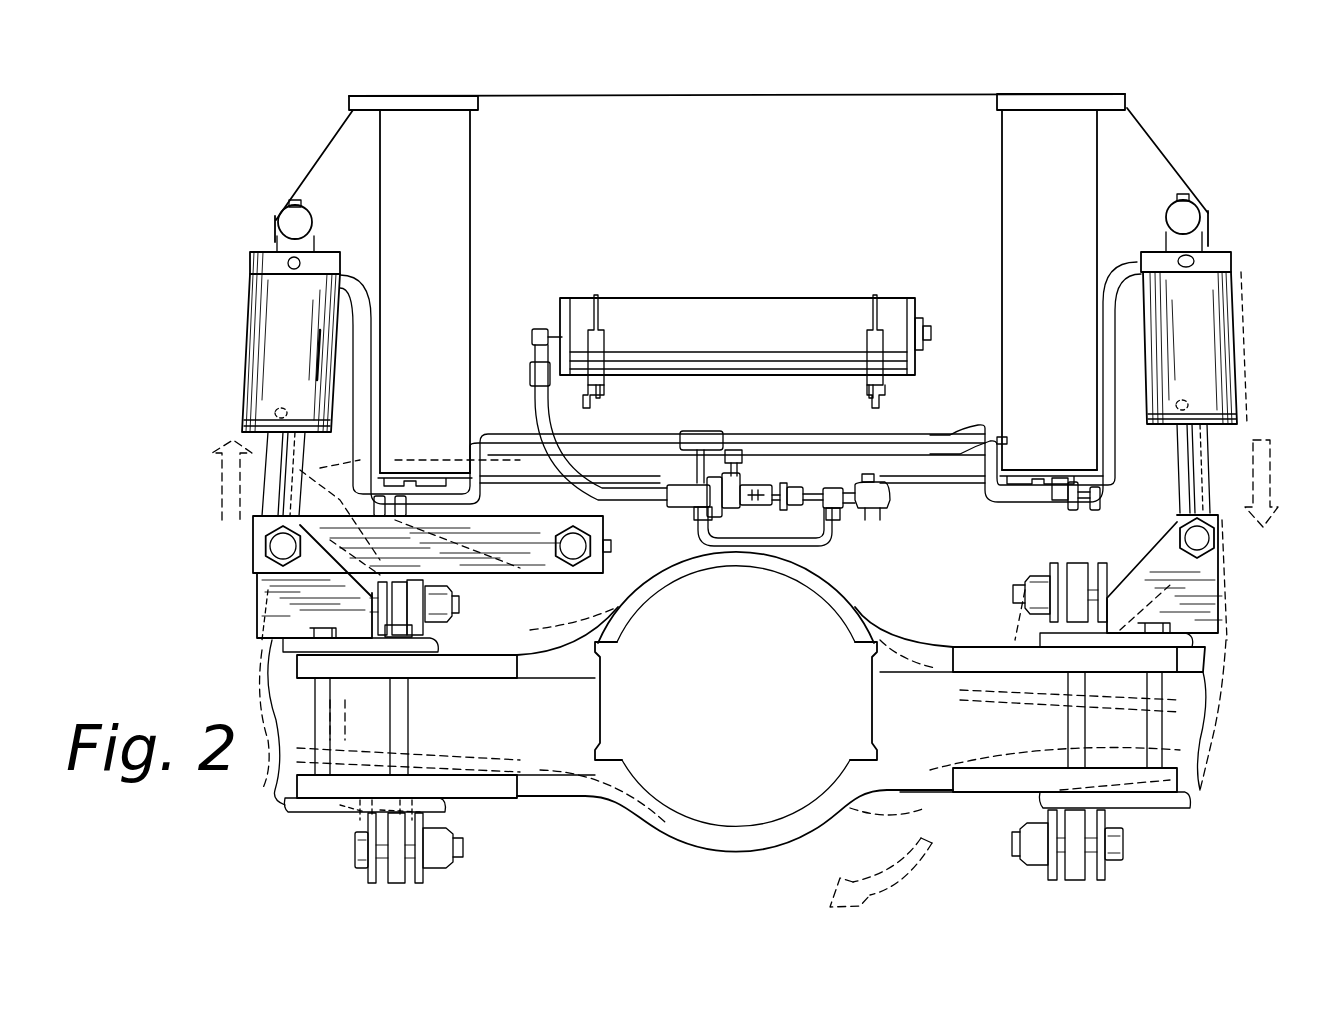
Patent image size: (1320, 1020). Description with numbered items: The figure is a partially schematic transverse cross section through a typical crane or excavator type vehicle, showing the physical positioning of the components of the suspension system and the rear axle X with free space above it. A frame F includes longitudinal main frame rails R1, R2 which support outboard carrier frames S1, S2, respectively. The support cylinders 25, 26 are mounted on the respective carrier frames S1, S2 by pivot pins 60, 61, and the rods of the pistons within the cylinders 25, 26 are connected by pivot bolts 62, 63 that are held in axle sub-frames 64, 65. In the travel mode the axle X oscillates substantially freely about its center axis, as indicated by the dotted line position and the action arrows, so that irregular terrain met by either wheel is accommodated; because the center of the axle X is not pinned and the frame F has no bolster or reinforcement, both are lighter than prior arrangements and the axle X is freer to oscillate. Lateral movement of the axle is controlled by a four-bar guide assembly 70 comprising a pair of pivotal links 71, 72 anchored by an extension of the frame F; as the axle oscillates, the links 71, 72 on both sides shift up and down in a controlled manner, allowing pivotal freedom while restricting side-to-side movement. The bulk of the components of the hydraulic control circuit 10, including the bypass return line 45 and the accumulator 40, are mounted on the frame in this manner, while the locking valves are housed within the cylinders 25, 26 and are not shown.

The frame F is at (722, 88).
The longitudinal main frame rail R1 is at (1062, 130).
The longitudinal main frame rail R2 is at (447, 168).
The outboard carrier frame S1 is at (1124, 150).
The outboard carrier frame S2 is at (333, 170).
The support cylinder 25 is at (1248, 329).
The support cylinder 26 is at (230, 335).
The pivot pin 60 is at (1186, 217).
The pivot pin 61 is at (287, 225).
The accumulator 40 is at (760, 320).
The hydraulic control circuit 10 is at (670, 513).
The bypass return line 45 is at (848, 520).
The pivot bolt 62 is at (1208, 538).
The pivot bolt 63 is at (282, 548).
The axle sub-frame 64 is at (1153, 563).
The axle sub-frame 65 is at (270, 597).
The pivotal link 72 is at (433, 628).
The 4-bar guide assembly 70 is at (302, 823).
The pivotal link 71 is at (412, 876).
The axle X is at (665, 822).